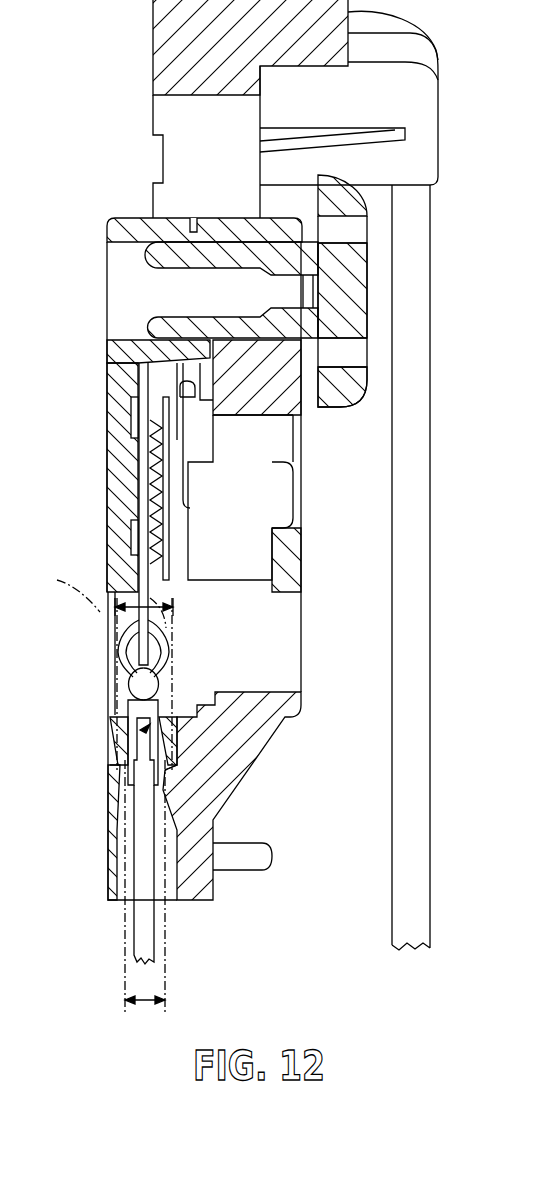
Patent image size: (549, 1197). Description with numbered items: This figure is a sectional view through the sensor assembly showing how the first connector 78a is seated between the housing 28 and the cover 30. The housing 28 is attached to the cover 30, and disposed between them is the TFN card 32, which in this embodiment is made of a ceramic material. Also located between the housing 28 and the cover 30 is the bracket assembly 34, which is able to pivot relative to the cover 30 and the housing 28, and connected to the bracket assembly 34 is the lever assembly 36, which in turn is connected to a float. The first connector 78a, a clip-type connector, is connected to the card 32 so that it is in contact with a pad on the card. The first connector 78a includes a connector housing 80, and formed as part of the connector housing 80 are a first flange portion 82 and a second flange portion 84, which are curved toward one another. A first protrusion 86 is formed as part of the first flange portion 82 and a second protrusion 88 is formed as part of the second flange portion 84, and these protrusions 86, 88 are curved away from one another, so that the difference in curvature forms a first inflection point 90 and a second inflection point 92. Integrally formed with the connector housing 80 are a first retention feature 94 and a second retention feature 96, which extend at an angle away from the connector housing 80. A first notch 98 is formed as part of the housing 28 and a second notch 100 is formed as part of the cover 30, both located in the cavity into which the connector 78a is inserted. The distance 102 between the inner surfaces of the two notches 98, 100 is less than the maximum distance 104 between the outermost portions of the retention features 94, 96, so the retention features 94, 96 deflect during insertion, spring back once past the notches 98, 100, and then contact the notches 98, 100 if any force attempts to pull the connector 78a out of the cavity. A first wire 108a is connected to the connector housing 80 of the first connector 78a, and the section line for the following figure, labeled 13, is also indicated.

The section line for FIG. 13 is at (97, 593).
The housing 28 is at (115, 373).
The cover 30 is at (292, 652).
The TFN card 32 is at (145, 490).
The bracket assembly 34 is at (168, 57).
The lever assembly 36 is at (417, 478).
The first connector 78a is at (141, 730).
The connector housing 80 is at (143, 710).
The first flange portion 82 is at (128, 688).
The second flange portion 84 is at (160, 688).
The first protrusion 86 is at (128, 626).
The second protrusion 88 is at (160, 628).
The first inflection point 90 is at (127, 652).
The second inflection point 92 is at (161, 652).
The first retention feature 94 is at (118, 752).
The second retention feature 96 is at (173, 746).
The first notch 98 is at (108, 768).
The second notch 100 is at (178, 760).
The distance 102 is at (130, 996).
The maximum distance 104 is at (102, 612).
The first wire 108a is at (148, 930).